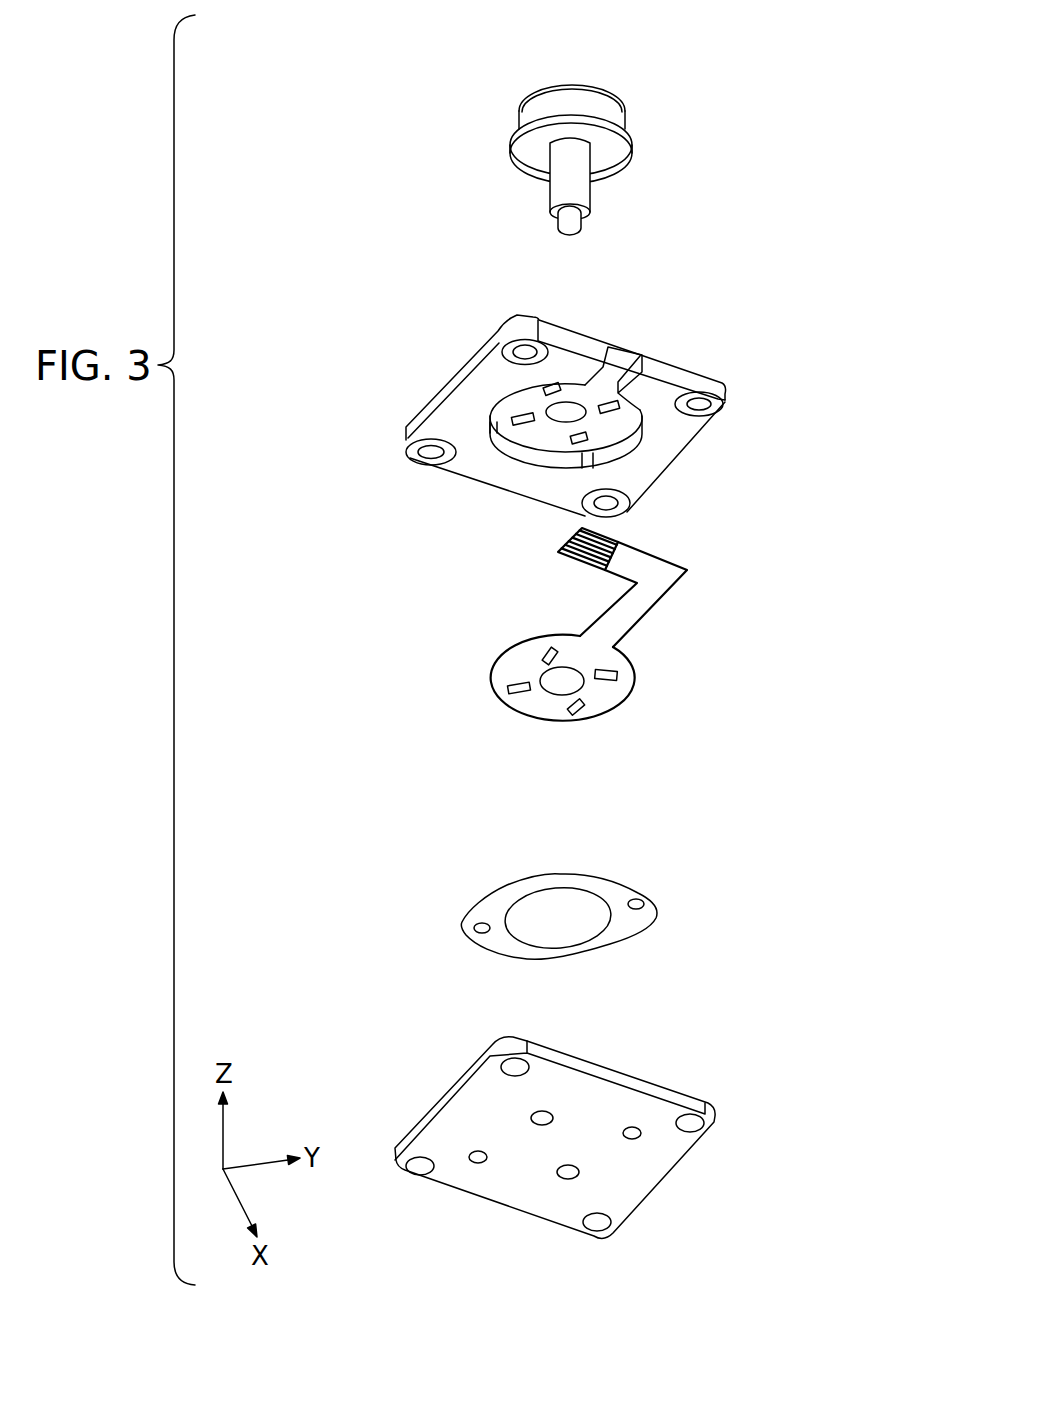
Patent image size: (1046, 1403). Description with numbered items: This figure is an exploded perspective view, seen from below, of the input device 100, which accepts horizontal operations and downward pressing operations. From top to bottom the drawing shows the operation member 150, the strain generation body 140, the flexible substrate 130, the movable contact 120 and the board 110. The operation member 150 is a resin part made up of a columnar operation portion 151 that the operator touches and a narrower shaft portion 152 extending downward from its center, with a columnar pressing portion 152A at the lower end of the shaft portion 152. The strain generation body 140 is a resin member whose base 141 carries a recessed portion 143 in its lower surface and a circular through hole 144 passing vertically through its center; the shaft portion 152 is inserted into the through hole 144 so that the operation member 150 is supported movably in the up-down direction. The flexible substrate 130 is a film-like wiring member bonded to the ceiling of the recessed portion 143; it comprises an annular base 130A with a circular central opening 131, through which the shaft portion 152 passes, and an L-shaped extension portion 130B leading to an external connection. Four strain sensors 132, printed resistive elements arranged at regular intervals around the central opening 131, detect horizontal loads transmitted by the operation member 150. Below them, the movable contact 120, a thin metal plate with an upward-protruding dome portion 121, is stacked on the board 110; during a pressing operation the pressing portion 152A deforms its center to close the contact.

The input device 100 is at (884, 59).
The board 110 is at (718, 1094).
The movable contact 120 is at (675, 878).
The dome portion 121 is at (593, 927).
The flexible substrate 130 is at (683, 614).
The base 130A is at (640, 683).
The extension portion 130B is at (668, 575).
The central opening 131 is at (545, 705).
The strain sensors 132 is at (548, 650).
The strain generation body 140 is at (730, 358).
The base 141 is at (680, 440).
The recessed portion 143 is at (621, 449).
The through hole 144 is at (555, 433).
The operation member 150 is at (645, 105).
The operation portion 151 is at (525, 118).
The shaft portion 152 is at (557, 195).
The pressing portion 152A is at (575, 215).